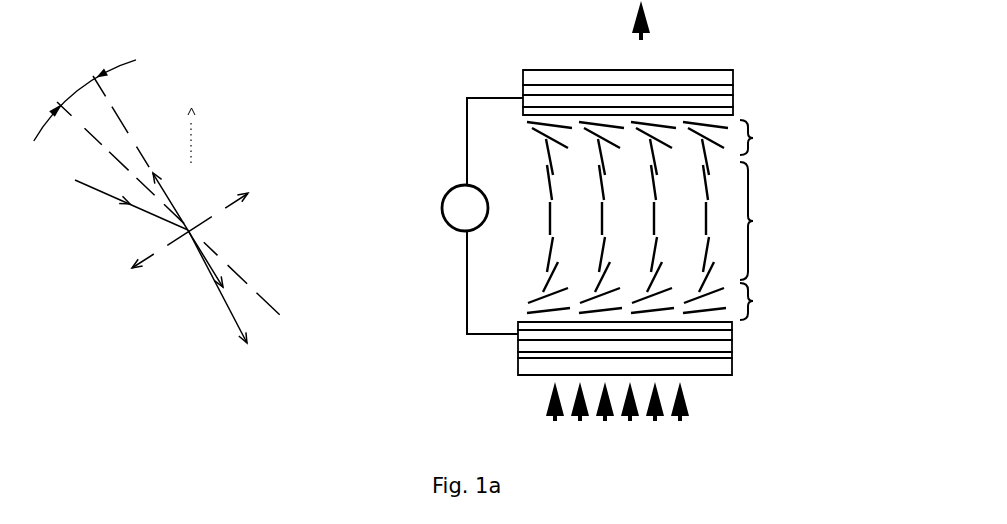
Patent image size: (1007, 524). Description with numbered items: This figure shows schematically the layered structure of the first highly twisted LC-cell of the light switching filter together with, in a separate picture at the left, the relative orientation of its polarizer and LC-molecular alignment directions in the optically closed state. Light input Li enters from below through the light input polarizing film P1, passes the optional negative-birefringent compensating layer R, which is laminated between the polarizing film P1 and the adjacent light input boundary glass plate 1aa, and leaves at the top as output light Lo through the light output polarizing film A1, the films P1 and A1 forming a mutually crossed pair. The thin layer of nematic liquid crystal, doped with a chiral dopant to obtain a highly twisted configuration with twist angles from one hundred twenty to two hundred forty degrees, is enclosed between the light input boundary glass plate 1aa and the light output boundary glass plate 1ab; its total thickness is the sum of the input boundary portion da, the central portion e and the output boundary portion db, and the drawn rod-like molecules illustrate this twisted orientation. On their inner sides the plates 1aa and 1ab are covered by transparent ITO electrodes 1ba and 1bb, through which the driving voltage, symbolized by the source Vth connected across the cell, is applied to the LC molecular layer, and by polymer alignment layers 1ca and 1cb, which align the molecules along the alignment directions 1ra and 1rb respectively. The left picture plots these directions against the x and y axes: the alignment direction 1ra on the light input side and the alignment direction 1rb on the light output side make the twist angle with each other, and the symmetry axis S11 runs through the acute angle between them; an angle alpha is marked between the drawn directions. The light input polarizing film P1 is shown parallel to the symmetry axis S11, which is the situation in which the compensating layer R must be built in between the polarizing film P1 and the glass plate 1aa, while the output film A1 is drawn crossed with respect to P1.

The angle between polarizer and analyzer directions alpha is at (85, 100).
The x axis x is at (314, 245).
The y axis y is at (186, 134).
The LC-molecular alignment direction on the light output boundary layer 1rb is at (120, 203).
The LC-molecular alignment direction on the light input boundary layer 1ra is at (217, 294).
The symmetry axis S11 is at (181, 213).
The light input polarizing film P1 is at (765, 398).
The light output polarizing film A1 is at (753, 65).
The outgoing light Lo is at (664, 20).
The light input Li is at (631, 401).
The light output boundary glass plate 1ab is at (735, 88).
The transparent ITO electrode on light output plate 1bb is at (735, 100).
The alignment layer on light output plate 1cb is at (735, 110).
The voltage source above threshold Vth is at (482, 216).
The central portion of LC molecular layer e is at (649, 217).
The light output boundary portion of LC molecular layer db is at (759, 137).
The light input boundary portion of LC molecular layer da is at (759, 301).
The alignment layer on light input plate 1ca is at (732, 325).
The transparent ITO electrode on light input plate 1ba is at (732, 335).
The light input boundary glass plate 1aa is at (732, 345).
The negative-birefringent compensating layer R is at (732, 355).